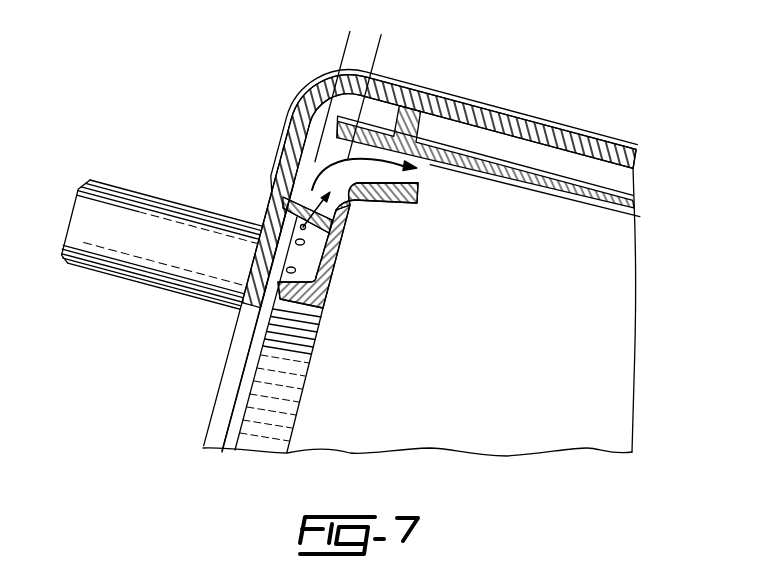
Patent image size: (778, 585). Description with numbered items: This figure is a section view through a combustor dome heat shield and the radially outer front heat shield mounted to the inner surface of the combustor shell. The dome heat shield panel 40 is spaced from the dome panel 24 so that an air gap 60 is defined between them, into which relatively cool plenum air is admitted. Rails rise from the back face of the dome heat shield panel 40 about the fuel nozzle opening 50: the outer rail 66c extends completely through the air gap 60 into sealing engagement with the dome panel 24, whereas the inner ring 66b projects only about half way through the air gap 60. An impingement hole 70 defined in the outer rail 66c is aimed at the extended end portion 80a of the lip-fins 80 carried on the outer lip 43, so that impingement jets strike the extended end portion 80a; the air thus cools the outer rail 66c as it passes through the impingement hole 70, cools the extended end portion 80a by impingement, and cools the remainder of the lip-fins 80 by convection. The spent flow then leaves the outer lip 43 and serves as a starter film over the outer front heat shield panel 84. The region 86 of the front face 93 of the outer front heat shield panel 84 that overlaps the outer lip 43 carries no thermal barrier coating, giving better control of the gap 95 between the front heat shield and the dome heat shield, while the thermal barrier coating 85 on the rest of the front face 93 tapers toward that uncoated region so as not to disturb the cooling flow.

The lip-fin 80 is at (314, 163).
The extended end portion 80a is at (348, 93).
The region 86 is at (317, 102).
The outer front heat shield panel 84 is at (632, 203).
The thermal barrier coating 85 is at (630, 218).
The dome panel 24 is at (302, 186).
The air gap 60 is at (252, 357).
The fuel nozzle opening 50 is at (258, 413).
The dome heat shield panel 40 is at (300, 229).
The impingement hole 70 is at (295, 211).
The outer rail 66c is at (285, 195).
The inner ring 66b is at (276, 295).
The gap 95 is at (383, 170).
The outer lip 43 is at (398, 201).
The front face 93 is at (437, 167).